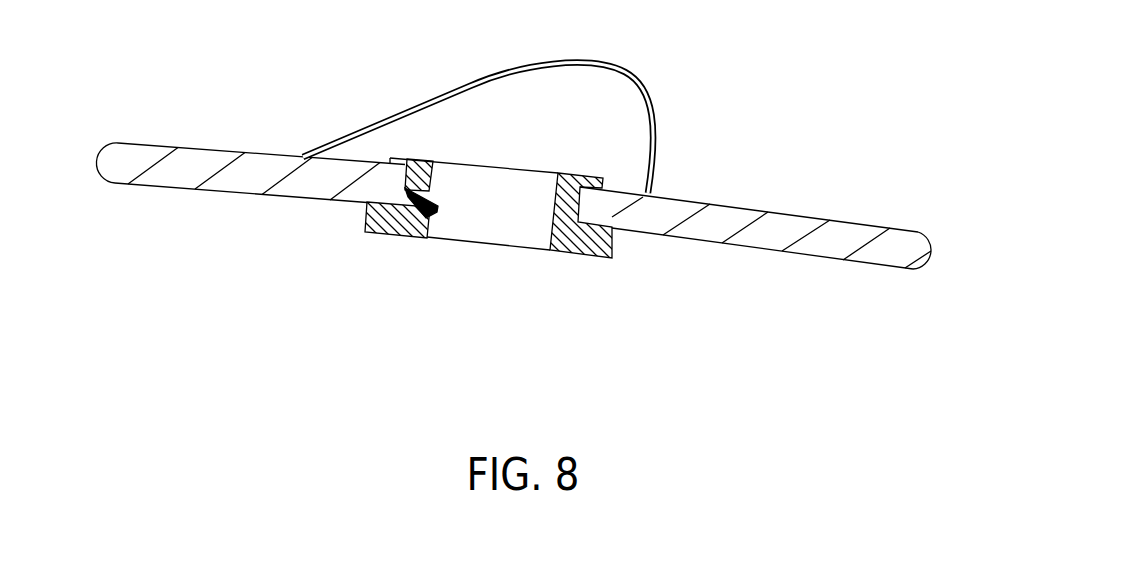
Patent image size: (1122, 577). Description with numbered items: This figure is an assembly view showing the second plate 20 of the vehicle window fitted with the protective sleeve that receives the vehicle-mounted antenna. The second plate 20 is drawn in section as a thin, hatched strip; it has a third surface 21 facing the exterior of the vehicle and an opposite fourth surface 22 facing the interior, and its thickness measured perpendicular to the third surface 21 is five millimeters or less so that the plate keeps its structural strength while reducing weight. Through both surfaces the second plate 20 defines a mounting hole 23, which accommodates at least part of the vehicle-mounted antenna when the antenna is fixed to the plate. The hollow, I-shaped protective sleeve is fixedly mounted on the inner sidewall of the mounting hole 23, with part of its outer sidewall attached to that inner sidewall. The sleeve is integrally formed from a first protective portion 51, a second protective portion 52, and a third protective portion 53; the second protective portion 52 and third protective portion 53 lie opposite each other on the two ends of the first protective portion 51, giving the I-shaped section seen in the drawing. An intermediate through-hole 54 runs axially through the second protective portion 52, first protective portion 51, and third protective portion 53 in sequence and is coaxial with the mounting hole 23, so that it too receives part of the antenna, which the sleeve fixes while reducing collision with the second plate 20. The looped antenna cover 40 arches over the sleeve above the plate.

The second plate 20 is at (743, 218).
The third surface 21 is at (222, 148).
The fourth surface 22 is at (222, 192).
The mounting hole 23 is at (428, 220).
The antenna cover 40 is at (655, 105).
The first protective portion 51 is at (568, 252).
The second protective portion 52 is at (388, 157).
The third protective portion 53 is at (380, 233).
The intermediate through-hole 54 is at (492, 217).